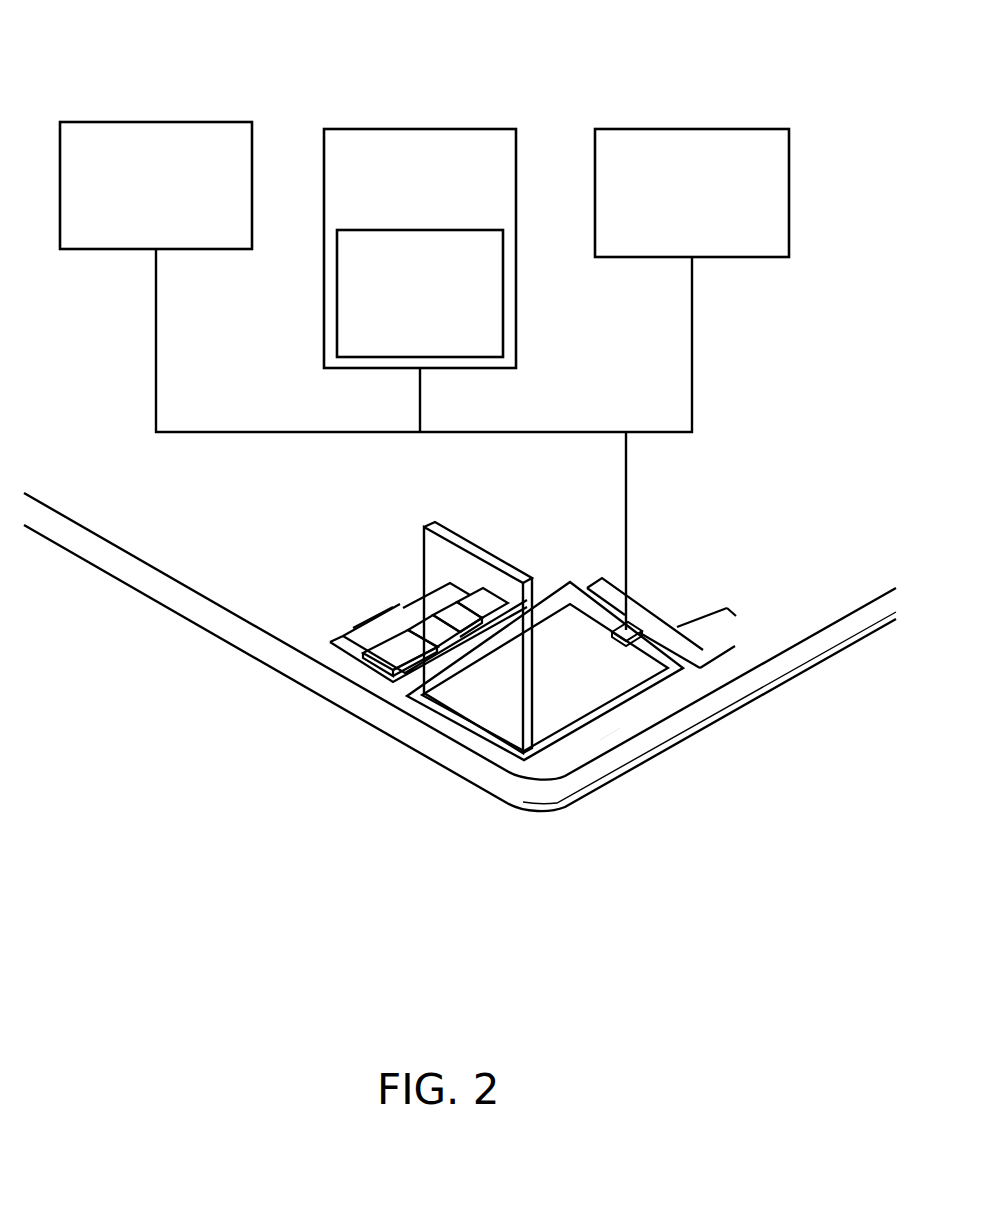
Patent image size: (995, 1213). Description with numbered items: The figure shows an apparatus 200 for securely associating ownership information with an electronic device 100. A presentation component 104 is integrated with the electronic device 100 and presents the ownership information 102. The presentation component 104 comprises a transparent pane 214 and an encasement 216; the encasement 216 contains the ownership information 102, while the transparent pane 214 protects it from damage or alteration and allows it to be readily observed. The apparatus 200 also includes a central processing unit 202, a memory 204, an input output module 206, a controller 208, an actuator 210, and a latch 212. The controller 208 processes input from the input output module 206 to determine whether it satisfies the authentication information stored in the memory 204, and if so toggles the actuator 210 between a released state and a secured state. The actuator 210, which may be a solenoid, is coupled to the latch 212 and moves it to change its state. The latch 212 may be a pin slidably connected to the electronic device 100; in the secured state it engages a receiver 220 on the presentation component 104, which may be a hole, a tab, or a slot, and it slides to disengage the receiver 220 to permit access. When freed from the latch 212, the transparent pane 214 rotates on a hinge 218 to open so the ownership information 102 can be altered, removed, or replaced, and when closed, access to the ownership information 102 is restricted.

The electronic device 100 is at (173, 629).
The ownership information 102 is at (620, 675).
The presentation component 104 is at (455, 738).
The apparatus 200 is at (96, 72).
The central processing unit 202 is at (174, 208).
The memory 204 is at (438, 196).
The input output module 206 is at (709, 215).
The controller 208 is at (438, 316).
The actuator 210 is at (633, 628).
The latch 212 is at (630, 646).
The transparent pane 214 is at (448, 587).
The encasement 216 is at (622, 700).
The hinge 218 is at (538, 752).
The receiver 220 is at (471, 548).